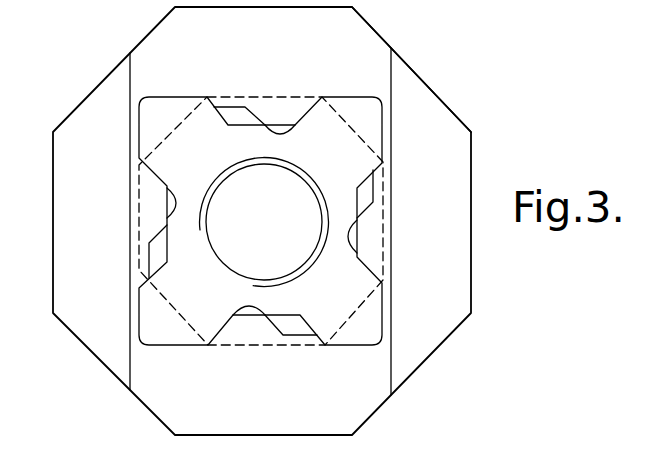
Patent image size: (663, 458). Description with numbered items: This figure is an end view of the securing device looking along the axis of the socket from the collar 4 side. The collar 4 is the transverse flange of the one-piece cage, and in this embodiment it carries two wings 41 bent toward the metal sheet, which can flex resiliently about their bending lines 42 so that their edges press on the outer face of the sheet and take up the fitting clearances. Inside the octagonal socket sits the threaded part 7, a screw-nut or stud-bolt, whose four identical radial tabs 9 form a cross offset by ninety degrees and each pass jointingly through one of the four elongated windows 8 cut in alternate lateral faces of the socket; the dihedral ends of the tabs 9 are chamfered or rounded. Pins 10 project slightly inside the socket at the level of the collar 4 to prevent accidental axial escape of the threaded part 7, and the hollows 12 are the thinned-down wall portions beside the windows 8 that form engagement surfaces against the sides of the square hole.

The collar 4 is at (372, 46).
The wings 41 is at (430, 118).
The bending lines 42 is at (392, 71).
The threaded part 7 is at (335, 181).
The windows 8 is at (157, 267).
The radial tabs 9 is at (373, 303).
The pins 10 is at (171, 203).
The hollows 12 is at (230, 115).